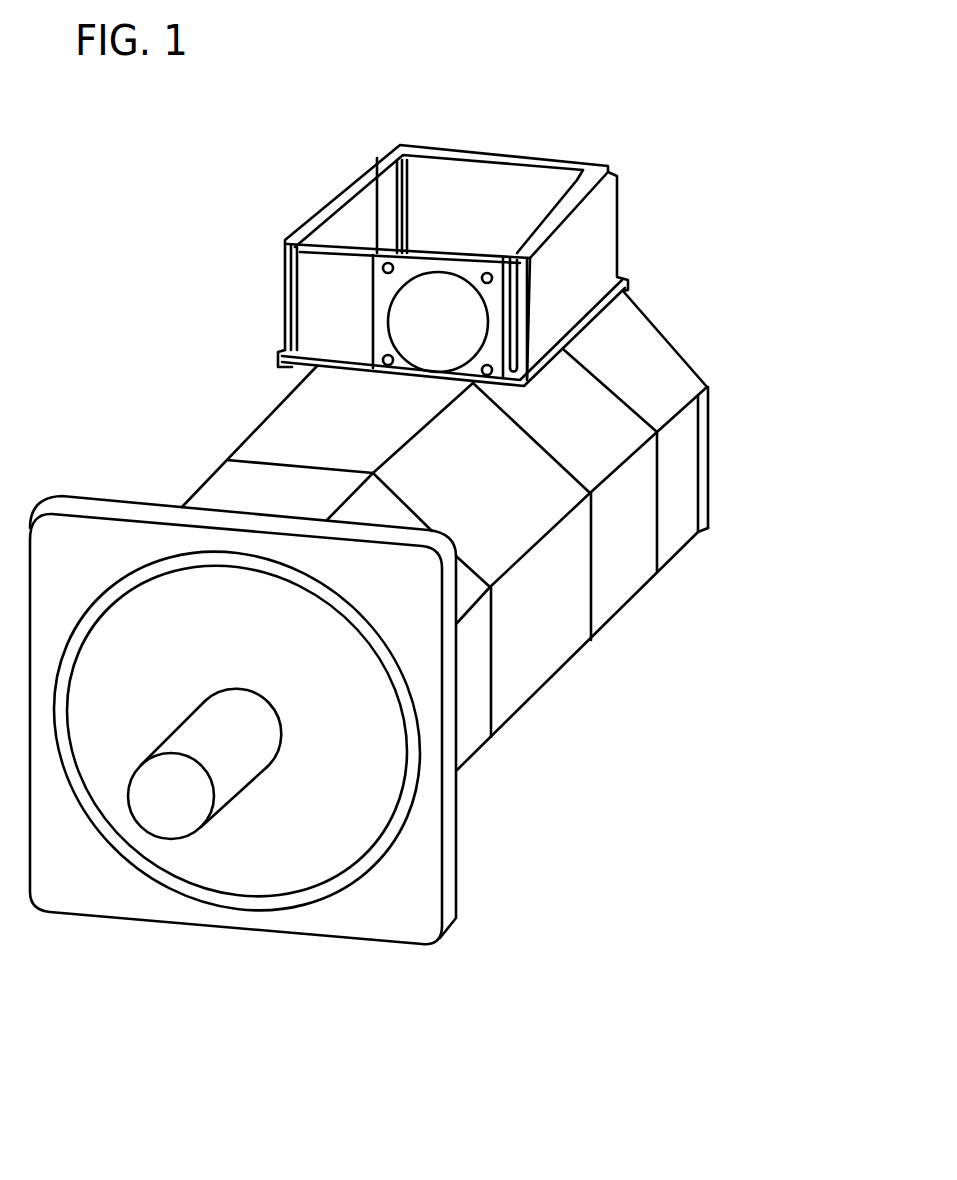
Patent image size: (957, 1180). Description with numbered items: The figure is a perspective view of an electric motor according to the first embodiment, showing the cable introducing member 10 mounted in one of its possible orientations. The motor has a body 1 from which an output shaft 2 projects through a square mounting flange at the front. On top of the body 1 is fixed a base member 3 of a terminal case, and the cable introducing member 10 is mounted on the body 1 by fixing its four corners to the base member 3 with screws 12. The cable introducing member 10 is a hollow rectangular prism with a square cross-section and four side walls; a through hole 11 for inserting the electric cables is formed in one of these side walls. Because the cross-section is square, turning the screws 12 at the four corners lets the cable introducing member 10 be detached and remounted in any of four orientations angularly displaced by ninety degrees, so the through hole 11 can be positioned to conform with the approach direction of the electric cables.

The body 1 is at (725, 278).
The output shaft 2 is at (172, 822).
The base member 3 is at (281, 378).
The cable introducing member 10 is at (603, 228).
The through hole 11 is at (448, 292).
The screws 12 is at (286, 334).